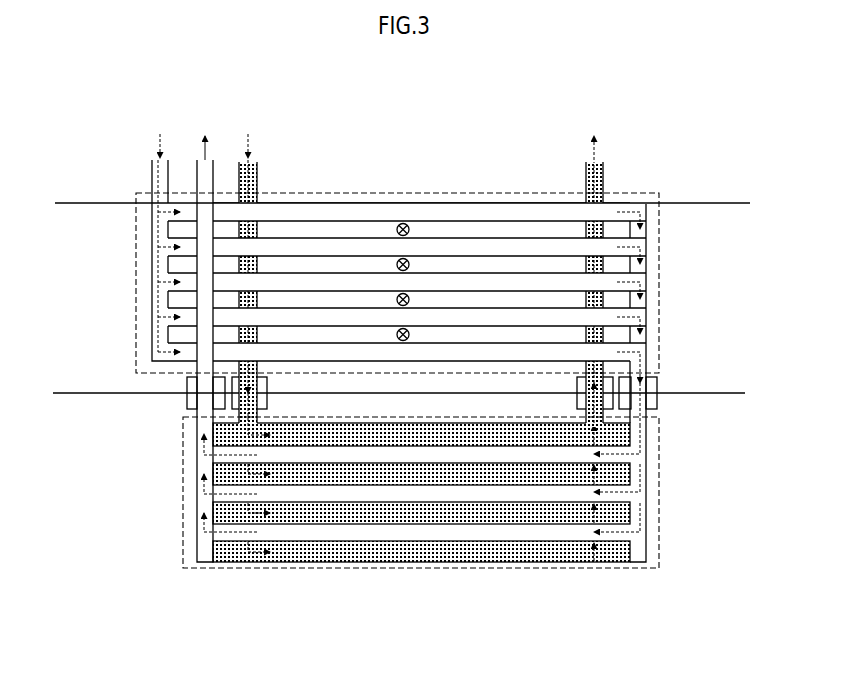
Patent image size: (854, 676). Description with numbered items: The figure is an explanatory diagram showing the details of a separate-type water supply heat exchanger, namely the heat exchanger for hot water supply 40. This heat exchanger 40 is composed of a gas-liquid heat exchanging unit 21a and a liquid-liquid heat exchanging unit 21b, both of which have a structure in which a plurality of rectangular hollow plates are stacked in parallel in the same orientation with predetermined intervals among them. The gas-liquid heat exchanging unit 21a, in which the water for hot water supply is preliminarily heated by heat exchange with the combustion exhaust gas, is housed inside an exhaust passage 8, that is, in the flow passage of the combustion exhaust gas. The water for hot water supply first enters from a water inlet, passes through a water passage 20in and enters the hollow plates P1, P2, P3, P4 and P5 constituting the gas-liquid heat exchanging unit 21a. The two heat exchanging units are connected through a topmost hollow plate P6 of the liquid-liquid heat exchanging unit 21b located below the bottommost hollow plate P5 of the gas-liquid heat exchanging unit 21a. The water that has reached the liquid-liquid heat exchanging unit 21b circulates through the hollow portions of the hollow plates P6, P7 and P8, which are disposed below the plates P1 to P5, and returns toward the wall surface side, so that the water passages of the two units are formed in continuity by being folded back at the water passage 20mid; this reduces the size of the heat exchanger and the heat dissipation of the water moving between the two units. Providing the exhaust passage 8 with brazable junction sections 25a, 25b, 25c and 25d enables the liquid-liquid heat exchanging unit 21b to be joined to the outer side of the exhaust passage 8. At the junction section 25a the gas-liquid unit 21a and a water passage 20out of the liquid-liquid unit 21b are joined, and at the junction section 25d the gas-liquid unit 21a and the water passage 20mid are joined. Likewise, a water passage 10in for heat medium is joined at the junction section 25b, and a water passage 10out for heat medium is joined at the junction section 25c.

The heat exchanger for hot water supply 40 is at (401, 352).
The exhaust passage 8 is at (710, 203).
The water passage 20in is at (152, 172).
The water passage 20out is at (197, 499).
The water passage 20mid is at (647, 553).
The water passage for heat medium 10in is at (258, 171).
The water passage for heat medium 10out is at (605, 172).
The gas-liquid heat exchanging unit 21a is at (400, 193).
The liquid-liquid heat exchanging unit 21b is at (258, 572).
The hollow plate P1 is at (472, 212).
The hollow plate P2 is at (622, 247).
The hollow plate P3 is at (622, 282).
The hollow plate P4 is at (622, 317).
The hollow plate P5 is at (622, 352).
The hollow plate P6 is at (622, 449).
The hollow plate P7 is at (622, 489).
The hollow plate P8 is at (622, 527).
The junction section 25a is at (187, 402).
The junction section 25b is at (267, 400).
The junction section 25c is at (577, 400).
The junction section 25d is at (657, 402).